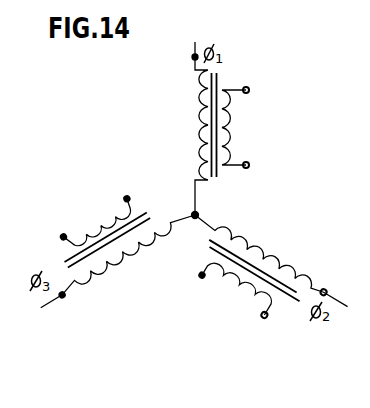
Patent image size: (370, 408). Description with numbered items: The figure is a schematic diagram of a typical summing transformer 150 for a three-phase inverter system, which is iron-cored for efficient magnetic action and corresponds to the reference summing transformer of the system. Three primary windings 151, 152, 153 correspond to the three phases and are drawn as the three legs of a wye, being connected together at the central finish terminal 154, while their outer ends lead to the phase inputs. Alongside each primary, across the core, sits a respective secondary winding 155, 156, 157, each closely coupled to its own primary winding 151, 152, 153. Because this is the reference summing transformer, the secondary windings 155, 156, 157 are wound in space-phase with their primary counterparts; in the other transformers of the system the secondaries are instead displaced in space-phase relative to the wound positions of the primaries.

The summing transformer 150 is at (138, 320).
The primary winding 151 is at (194, 119).
The primary winding 152 is at (266, 260).
The primary winding 153 is at (135, 254).
The finish terminal 154 is at (198, 214).
The secondary winding 155 is at (233, 119).
The secondary winding 156 is at (237, 295).
The secondary winding 157 is at (101, 225).